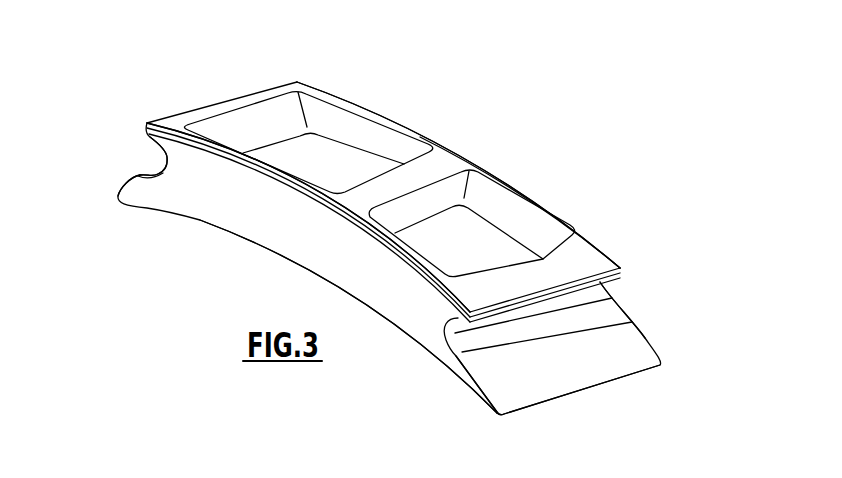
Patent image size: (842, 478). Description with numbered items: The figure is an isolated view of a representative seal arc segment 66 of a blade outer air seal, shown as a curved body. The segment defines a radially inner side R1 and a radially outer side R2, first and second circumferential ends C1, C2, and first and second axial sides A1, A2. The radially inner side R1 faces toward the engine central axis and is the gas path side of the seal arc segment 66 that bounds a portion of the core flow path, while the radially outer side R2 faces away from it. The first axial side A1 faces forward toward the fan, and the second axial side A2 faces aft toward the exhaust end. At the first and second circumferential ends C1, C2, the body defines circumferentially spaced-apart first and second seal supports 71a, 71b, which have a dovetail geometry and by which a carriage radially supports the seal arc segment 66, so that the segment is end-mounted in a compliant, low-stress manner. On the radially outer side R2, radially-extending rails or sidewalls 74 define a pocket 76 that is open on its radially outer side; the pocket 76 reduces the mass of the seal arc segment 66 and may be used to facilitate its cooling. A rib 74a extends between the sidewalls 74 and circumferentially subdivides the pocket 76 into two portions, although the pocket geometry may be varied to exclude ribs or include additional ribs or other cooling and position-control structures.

The seal arc segment 66 is at (200, 247).
The first seal support 71a is at (481, 344).
The second seal support 71b is at (152, 158).
The rails or sidewalls 74 is at (219, 126).
The rib 74a is at (410, 177).
The pocket 76 is at (348, 152).
The first axial side A1 is at (293, 240).
The second axial side A2 is at (470, 160).
The radially inner side R1 is at (400, 341).
The radially outer side R2 is at (566, 193).
The first circumferential end C1 is at (657, 322).
The second circumferential end C2 is at (107, 170).